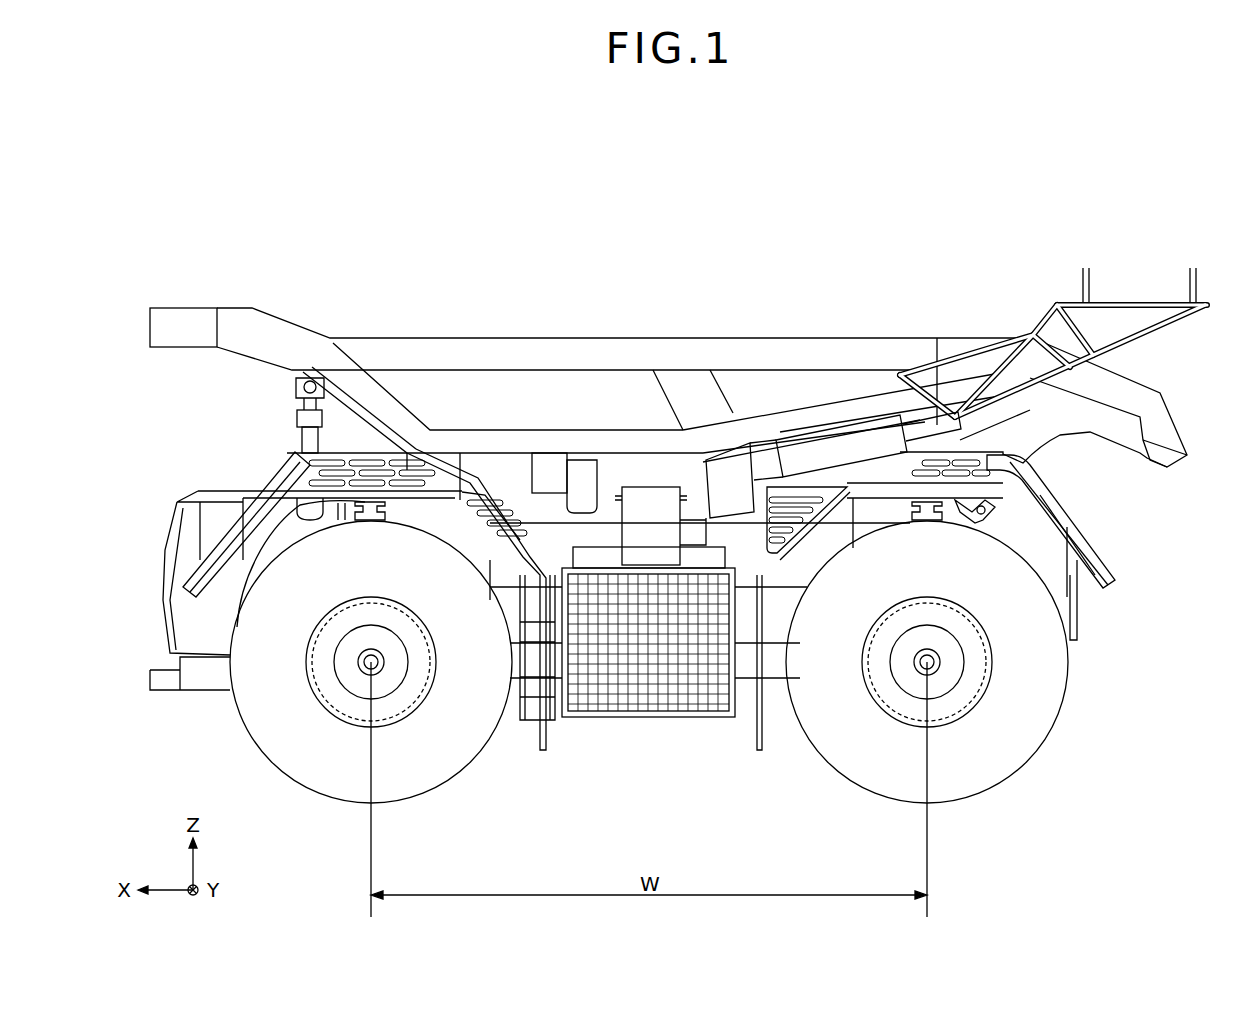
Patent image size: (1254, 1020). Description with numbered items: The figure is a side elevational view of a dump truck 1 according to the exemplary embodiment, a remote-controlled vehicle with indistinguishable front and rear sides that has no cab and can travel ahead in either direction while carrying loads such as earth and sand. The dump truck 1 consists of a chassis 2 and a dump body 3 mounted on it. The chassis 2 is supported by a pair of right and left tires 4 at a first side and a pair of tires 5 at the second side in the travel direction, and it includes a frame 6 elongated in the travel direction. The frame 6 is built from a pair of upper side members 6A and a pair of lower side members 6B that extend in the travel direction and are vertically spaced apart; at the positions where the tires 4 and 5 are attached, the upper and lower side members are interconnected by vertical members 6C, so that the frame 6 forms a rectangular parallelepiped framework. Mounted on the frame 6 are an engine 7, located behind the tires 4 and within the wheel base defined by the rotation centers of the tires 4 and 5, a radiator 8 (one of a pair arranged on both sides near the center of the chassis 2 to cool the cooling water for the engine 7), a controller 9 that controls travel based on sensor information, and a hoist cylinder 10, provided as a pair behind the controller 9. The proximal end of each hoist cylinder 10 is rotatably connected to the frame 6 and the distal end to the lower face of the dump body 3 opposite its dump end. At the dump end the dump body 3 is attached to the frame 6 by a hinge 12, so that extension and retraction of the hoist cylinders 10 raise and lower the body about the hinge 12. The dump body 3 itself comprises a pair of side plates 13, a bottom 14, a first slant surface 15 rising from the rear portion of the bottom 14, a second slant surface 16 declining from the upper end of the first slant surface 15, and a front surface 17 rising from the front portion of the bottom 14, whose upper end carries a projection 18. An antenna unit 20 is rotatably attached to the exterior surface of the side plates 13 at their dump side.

The dump truck 1 is at (878, 270).
The chassis 2 is at (180, 713).
The dump body 3 is at (762, 336).
The tires 4 is at (422, 770).
The tires 5 is at (1005, 725).
The frame 6 is at (776, 705).
The upper side members 6A is at (787, 578).
The lower side members 6B is at (747, 662).
The vertical members 6C is at (373, 522).
The engine 7 is at (490, 625).
The radiator 8 is at (656, 718).
The controller 9 is at (203, 520).
The hoist cylinder 10 is at (298, 440).
The hinge 12 is at (1040, 532).
The side plates 13 is at (815, 355).
The bottom 14 is at (690, 518).
The first slant surface 15 is at (878, 445).
The second slant surface 16 is at (1152, 416).
The front surface 17 is at (300, 396).
The projection 18 is at (215, 320).
The antenna unit 20 is at (1138, 244).